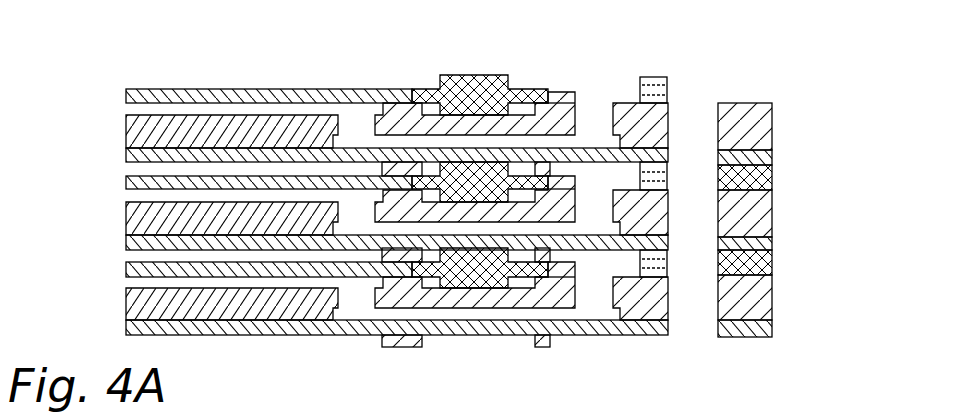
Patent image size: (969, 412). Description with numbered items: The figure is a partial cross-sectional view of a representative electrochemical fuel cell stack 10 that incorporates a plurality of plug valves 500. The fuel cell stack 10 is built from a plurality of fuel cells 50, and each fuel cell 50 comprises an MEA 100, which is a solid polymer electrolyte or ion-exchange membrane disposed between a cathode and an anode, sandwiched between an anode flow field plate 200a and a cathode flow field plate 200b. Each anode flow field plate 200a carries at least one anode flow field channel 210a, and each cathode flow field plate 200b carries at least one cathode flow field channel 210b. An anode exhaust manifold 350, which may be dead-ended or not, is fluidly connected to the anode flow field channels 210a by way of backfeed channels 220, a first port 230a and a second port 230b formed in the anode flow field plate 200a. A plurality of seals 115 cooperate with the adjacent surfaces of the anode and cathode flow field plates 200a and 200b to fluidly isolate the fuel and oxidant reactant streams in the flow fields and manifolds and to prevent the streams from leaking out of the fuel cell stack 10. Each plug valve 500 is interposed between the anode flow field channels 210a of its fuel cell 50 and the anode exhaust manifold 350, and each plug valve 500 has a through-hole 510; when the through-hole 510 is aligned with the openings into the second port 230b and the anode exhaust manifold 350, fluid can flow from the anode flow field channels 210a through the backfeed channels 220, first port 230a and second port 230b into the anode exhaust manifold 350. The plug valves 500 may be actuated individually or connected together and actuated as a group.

The electrochemical fuel cell stack 10 is at (752, 50).
The fuel cell 50 is at (787, 150).
The MEA 100 is at (126, 183).
The seal 115 is at (475, 75).
The anode flow field plate 200a is at (120, 103).
The cathode flow field plate 200b is at (120, 237).
The anode flow field channel 210a is at (208, 108).
The cathode flow field channel 210b is at (205, 253).
The backfeed channel 220 is at (395, 140).
The first port 230a is at (358, 123).
The second port 230b is at (588, 120).
The anode exhaust manifold 350 is at (693, 322).
The plug valve 500 is at (651, 77).
The through-hole 510 is at (670, 88).